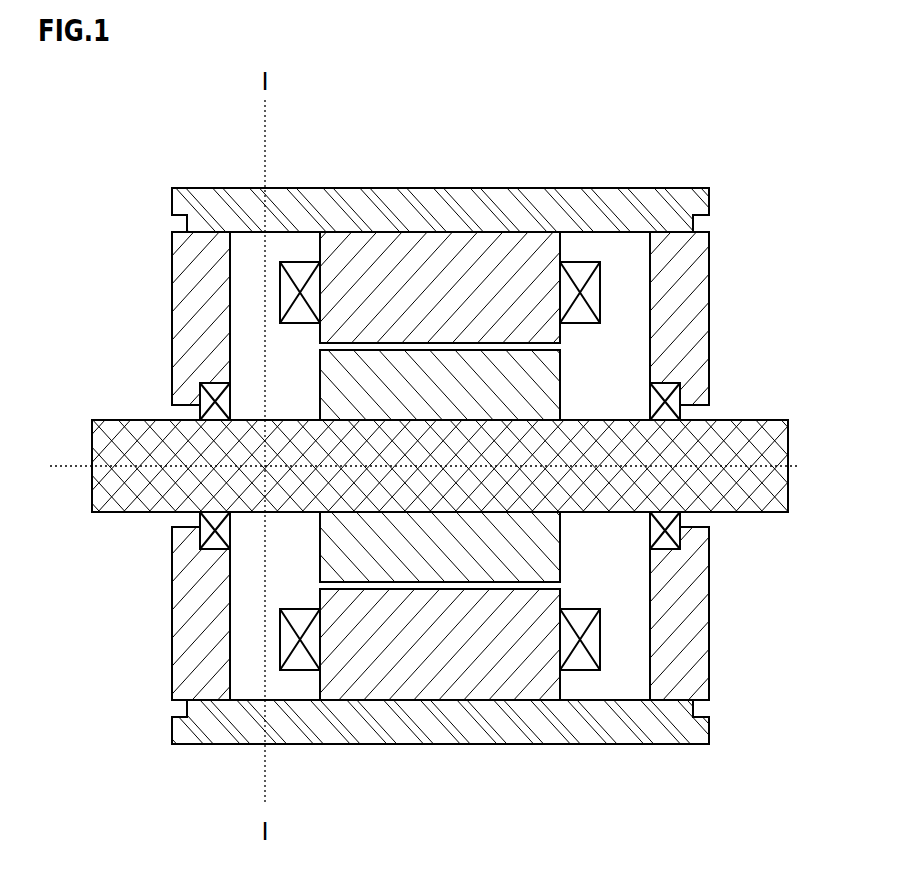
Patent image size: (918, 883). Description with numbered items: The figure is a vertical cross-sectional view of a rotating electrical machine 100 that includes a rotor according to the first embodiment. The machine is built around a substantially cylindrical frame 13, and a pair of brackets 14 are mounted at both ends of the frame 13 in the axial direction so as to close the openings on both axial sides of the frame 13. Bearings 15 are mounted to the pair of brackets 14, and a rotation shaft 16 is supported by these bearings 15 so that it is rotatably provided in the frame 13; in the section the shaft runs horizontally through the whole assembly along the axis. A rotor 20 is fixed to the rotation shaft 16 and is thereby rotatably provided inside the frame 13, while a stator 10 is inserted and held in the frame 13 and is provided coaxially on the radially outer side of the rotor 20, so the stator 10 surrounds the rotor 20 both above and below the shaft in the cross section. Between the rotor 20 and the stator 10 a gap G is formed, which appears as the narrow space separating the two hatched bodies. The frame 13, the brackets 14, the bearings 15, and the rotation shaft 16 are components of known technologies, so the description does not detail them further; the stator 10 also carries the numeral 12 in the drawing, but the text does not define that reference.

The rotating electrical machine 100 is at (143, 131).
The stator 10 is at (432, 240).
The top plate 12 is at (598, 212).
The frame 13 is at (711, 206).
The bracket 14 is at (710, 290).
The bearing 15 is at (686, 392).
The rotation shaft 16 is at (727, 418).
The rotor 20 is at (380, 728).
The gap G is at (487, 660).